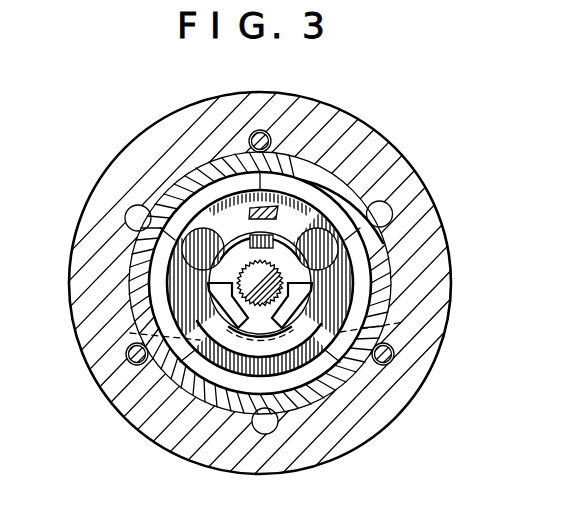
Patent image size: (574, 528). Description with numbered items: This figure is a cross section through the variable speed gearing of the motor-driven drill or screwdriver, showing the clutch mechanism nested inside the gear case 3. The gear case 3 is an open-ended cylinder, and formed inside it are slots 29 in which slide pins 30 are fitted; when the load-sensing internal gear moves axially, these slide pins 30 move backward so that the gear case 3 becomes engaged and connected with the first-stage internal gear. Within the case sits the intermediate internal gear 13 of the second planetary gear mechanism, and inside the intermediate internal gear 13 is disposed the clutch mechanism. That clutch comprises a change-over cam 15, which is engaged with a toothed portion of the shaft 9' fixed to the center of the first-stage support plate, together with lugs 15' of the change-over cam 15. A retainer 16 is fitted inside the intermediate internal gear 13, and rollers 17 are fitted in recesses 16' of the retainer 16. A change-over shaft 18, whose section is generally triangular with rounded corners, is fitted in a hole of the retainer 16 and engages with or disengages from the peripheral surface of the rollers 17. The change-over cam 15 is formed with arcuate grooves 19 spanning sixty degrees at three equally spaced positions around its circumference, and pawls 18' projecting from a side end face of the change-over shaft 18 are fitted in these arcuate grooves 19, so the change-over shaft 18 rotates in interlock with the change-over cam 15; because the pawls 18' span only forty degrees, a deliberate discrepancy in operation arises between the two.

The gear case 3 is at (425, 203).
The shaft 9' is at (290, 291).
The intermediate internal gear 13 is at (325, 176).
The change-over cam 15 is at (260, 295).
The lugs 15' is at (266, 241).
The retainer 16 is at (268, 280).
The recesses 16' is at (284, 301).
The rollers 17 is at (143, 230).
The change-over shaft 18 is at (260, 237).
The pawls 18' is at (273, 264).
The arcuate grooves 19 is at (347, 262).
The slots 29 is at (256, 131).
The slide pins 30 is at (266, 132).